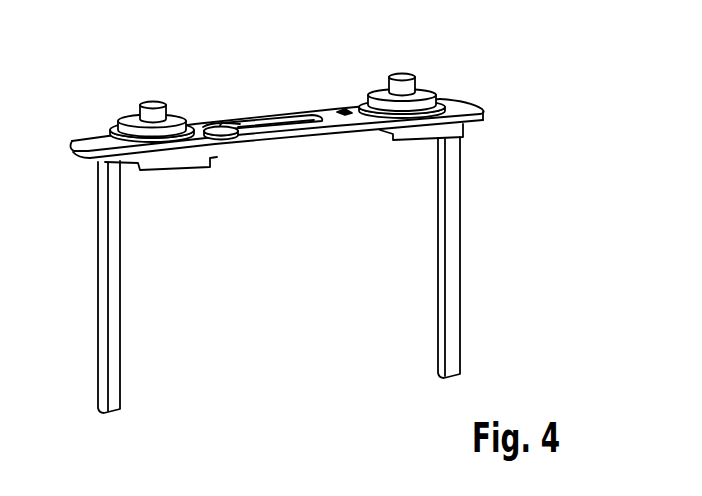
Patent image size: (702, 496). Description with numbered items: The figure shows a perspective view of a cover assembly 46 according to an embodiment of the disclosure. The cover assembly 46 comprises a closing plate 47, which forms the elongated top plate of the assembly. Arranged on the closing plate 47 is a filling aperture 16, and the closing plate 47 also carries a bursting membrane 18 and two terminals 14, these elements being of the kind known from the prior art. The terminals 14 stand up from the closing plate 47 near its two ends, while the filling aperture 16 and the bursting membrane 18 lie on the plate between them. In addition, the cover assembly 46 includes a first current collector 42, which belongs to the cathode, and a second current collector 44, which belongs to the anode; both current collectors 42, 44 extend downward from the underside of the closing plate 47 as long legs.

The terminals 14 is at (135, 118).
The filling aperture 16 is at (220, 127).
The bursting membrane 18 is at (289, 120).
The first current collector 42 is at (452, 271).
The second current collector 44 is at (108, 217).
The cover assembly 46 is at (516, 95).
The closing plate 47 is at (331, 107).